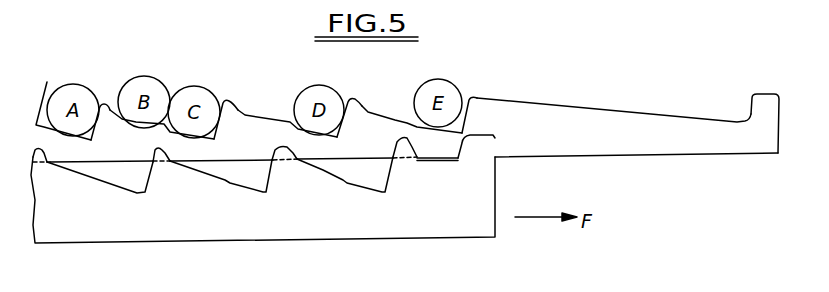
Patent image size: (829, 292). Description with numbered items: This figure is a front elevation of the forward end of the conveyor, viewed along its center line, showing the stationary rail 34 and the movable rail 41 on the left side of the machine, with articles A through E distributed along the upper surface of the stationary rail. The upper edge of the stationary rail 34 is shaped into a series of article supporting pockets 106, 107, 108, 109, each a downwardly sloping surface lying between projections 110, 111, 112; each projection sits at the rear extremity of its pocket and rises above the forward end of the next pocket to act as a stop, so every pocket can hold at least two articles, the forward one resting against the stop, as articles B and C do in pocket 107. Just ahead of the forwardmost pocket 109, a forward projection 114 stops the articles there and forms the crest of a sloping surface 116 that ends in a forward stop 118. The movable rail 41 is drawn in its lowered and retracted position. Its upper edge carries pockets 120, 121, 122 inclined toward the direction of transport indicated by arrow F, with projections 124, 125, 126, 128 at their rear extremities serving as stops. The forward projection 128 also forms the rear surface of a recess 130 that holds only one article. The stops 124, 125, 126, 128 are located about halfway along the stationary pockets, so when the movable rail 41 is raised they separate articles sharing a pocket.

The article supporting pocket 106 is at (41, 105).
The projection 110 is at (102, 103).
The article supporting pocket 107 is at (113, 117).
The projection 111 is at (229, 96).
The article supporting pocket 108 is at (263, 113).
The projection 112 is at (355, 96).
The article supporting pocket 109 is at (388, 117).
The forward projection 114 is at (470, 97).
The sloping surface 116 is at (678, 119).
The forward stop 118 is at (762, 94).
The stationary rail 34 is at (553, 147).
The movable rail 41 is at (248, 230).
The projection 124 is at (47, 155).
The article supporting pocket 120 is at (95, 180).
The projection 125 is at (157, 148).
The article supporting pocket 121 is at (215, 173).
The projection 126 is at (286, 147).
The article supporting pocket 122 is at (322, 173).
The forward projection 128 is at (405, 139).
The recess 130 is at (442, 151).